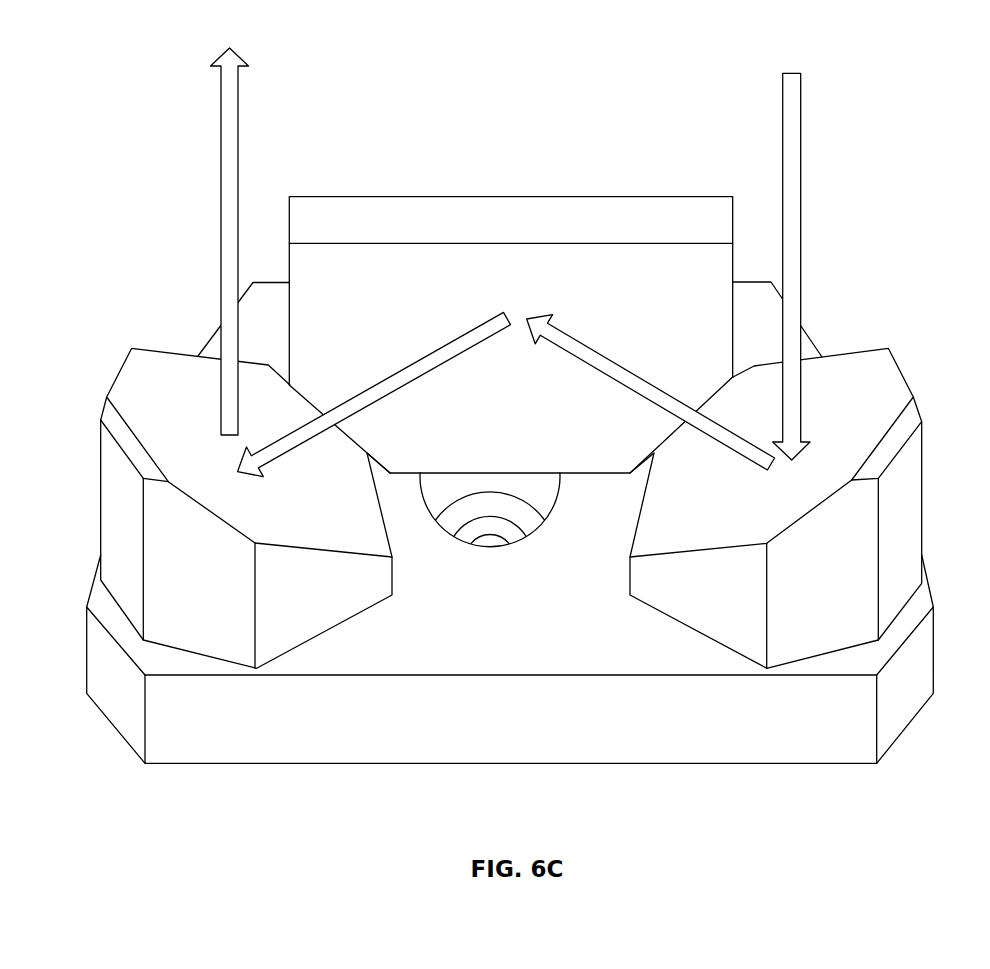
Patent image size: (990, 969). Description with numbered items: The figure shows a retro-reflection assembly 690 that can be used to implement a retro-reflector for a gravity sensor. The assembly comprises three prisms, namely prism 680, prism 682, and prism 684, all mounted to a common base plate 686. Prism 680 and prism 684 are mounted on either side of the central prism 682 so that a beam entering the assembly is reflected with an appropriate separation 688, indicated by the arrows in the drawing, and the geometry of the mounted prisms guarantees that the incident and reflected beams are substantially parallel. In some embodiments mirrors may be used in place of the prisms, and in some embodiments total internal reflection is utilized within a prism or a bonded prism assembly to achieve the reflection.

The prism 680 is at (160, 367).
The prism 682 is at (518, 208).
The prism 684 is at (856, 367).
The base plate 686 is at (328, 745).
The separation 688 is at (230, 135).
The retro-reflection assembly 690 is at (880, 190).